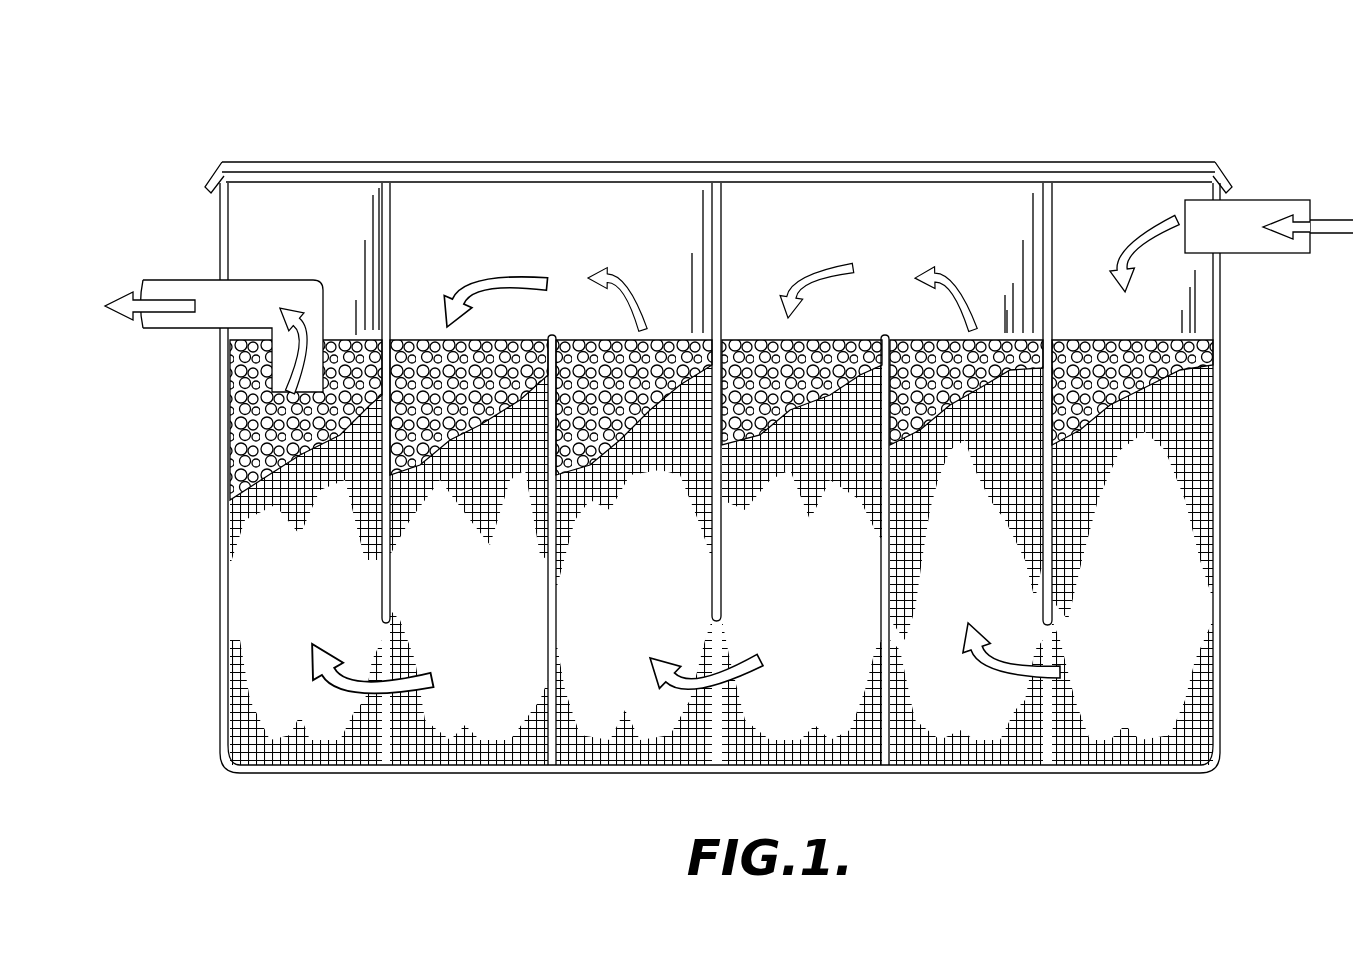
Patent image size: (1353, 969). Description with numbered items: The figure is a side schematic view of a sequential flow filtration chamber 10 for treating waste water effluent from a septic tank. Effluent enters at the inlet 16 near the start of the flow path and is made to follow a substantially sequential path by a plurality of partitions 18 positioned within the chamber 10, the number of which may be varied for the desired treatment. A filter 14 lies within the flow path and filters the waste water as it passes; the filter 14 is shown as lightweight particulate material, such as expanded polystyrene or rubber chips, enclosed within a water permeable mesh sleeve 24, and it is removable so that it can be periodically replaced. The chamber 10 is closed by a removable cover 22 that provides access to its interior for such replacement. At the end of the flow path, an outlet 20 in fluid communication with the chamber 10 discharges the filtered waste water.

The sequential flow filtration chamber 10 is at (942, 111).
The filter 14 is at (357, 335).
The inlet 16 is at (1245, 200).
The partition 18 is at (391, 212).
The outlet 20 is at (182, 280).
The removable cover 22 is at (598, 163).
The mesh screen at tank bottom 24 is at (287, 742).